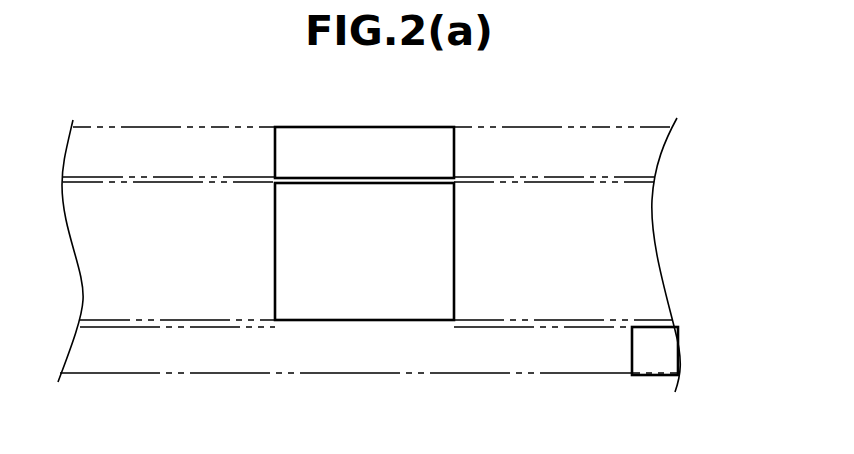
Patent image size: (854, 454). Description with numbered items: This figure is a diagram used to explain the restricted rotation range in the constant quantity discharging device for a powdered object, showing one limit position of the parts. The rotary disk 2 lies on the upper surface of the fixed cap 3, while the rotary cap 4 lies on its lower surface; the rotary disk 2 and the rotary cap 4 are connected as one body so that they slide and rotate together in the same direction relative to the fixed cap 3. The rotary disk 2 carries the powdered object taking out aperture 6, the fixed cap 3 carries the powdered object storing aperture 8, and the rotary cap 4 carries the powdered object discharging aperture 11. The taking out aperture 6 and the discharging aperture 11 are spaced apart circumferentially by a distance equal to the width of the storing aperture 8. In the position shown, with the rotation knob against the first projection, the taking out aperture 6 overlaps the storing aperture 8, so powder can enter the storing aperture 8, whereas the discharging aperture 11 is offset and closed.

The rotary disk 2 is at (138, 125).
The fixed cap 3 is at (642, 305).
The rotary cap 4 is at (287, 375).
The powdered object taking out aperture 6 is at (415, 137).
The powdered object storing aperture 8 is at (438, 250).
The powdered object discharging aperture 11 is at (640, 368).